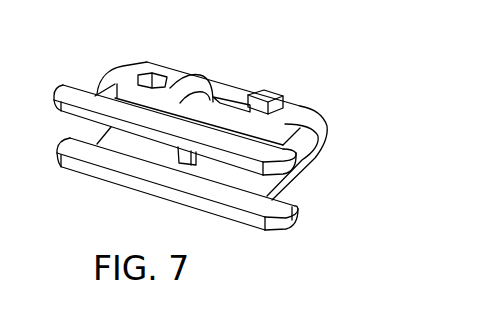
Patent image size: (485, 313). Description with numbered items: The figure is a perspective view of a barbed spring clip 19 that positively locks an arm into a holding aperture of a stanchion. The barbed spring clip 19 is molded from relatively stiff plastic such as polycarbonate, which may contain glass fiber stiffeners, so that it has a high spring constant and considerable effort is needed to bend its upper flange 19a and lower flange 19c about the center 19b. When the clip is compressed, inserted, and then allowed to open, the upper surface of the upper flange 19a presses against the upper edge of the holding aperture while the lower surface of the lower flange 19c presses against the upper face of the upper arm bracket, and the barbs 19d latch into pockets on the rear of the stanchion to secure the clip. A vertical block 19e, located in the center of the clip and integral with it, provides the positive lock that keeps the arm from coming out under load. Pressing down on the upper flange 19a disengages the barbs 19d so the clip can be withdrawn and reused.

The barbed spring clip 19 is at (308, 104).
The upper flange 19a is at (63, 97).
The center 19b is at (325, 123).
The lower flange 19c is at (68, 150).
The barbs 19d is at (155, 72).
The vertical block 19e is at (218, 100).